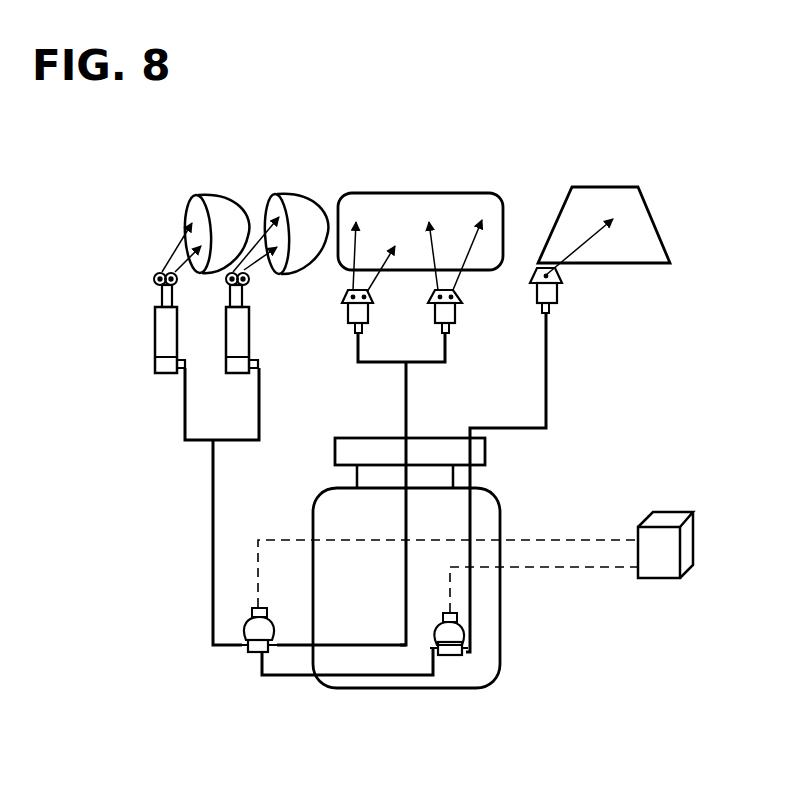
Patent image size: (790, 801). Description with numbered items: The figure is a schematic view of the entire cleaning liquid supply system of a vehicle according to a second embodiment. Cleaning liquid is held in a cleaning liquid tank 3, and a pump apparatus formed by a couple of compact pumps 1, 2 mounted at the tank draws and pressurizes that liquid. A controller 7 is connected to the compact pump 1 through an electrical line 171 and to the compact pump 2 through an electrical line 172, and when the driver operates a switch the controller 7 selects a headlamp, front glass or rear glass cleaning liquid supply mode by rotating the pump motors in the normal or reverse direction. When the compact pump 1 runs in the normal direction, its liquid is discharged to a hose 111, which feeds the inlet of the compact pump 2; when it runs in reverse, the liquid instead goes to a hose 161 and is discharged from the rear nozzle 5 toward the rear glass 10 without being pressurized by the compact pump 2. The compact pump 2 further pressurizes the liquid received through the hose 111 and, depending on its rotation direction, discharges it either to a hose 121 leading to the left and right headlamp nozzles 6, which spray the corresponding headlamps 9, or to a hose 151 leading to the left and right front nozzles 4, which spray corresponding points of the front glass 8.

The compact pump 1 is at (450, 655).
The compact pump 2 is at (260, 650).
The cleaning liquid tank 3 is at (488, 642).
The front nozzles 4 is at (430, 298).
The rear nozzle 5 is at (547, 292).
The headlamp nozzles 6 is at (235, 290).
The controller 7 is at (688, 540).
The front glass 8 is at (448, 212).
The headlamps 9 is at (287, 200).
The rear glass 10 is at (597, 207).
The hose 111 is at (342, 677).
The hose 121 is at (213, 590).
The hose 151 is at (406, 393).
The hose 161 is at (547, 365).
The electrical line 171 is at (577, 567).
The electrical line 172 is at (582, 540).